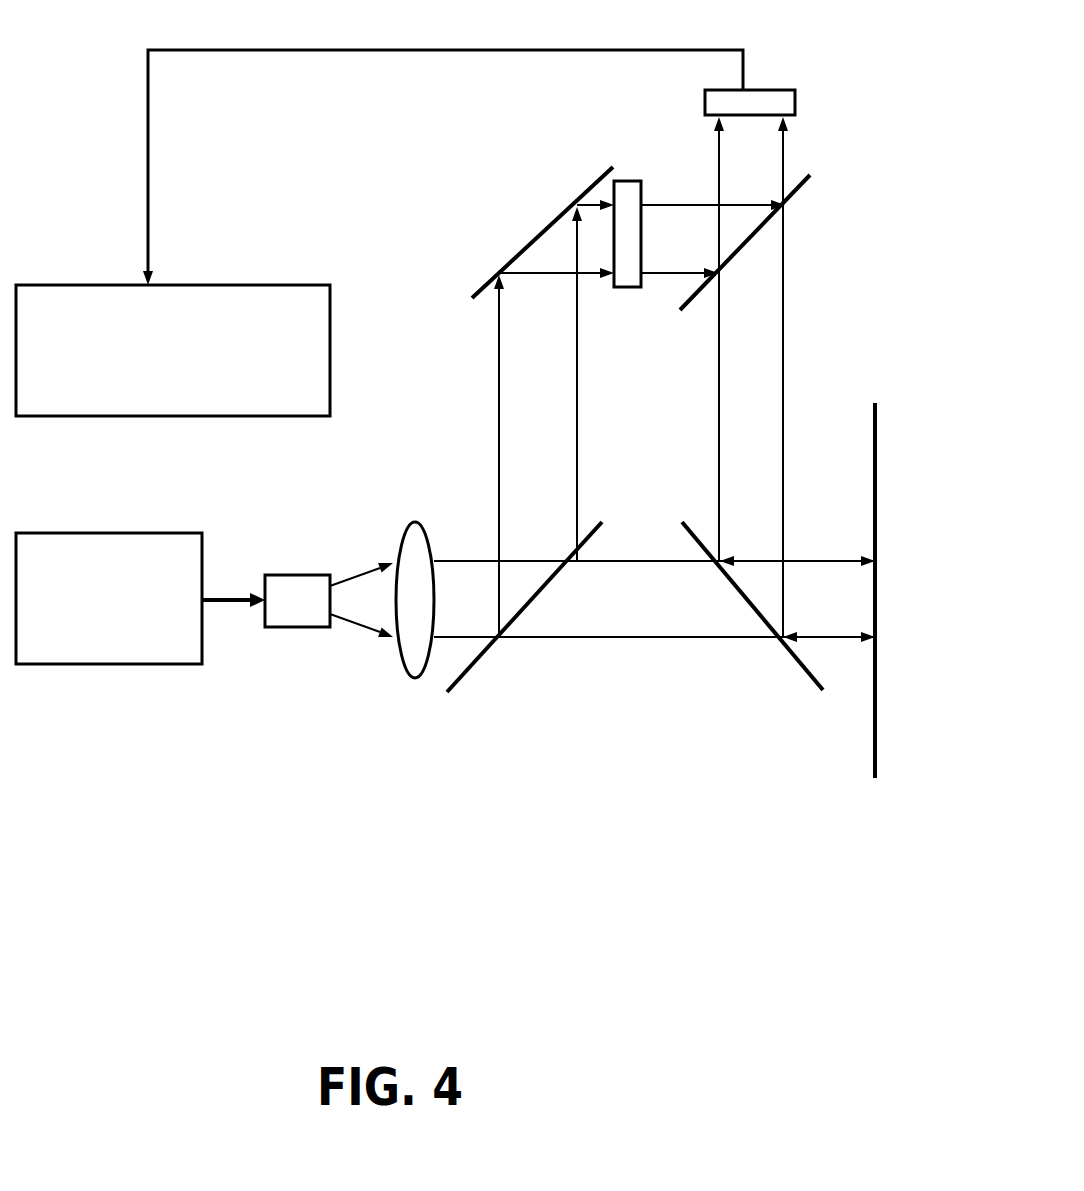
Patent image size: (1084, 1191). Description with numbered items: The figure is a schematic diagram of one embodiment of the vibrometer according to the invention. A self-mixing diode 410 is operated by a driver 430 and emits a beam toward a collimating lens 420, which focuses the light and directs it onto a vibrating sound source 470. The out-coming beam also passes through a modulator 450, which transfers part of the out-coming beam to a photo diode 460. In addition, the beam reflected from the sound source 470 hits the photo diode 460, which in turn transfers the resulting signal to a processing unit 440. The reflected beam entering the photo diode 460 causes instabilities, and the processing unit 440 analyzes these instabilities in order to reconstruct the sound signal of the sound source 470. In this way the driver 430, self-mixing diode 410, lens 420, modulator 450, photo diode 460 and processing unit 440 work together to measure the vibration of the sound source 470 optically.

The self-mixing diode 410 is at (306, 575).
The collimating lens 420 is at (415, 522).
The driver 430 is at (125, 665).
The processing unit 440 is at (257, 285).
The modulator 450 is at (632, 181).
The photo diode 460 is at (788, 90).
The vibrating sound source 470 is at (875, 742).